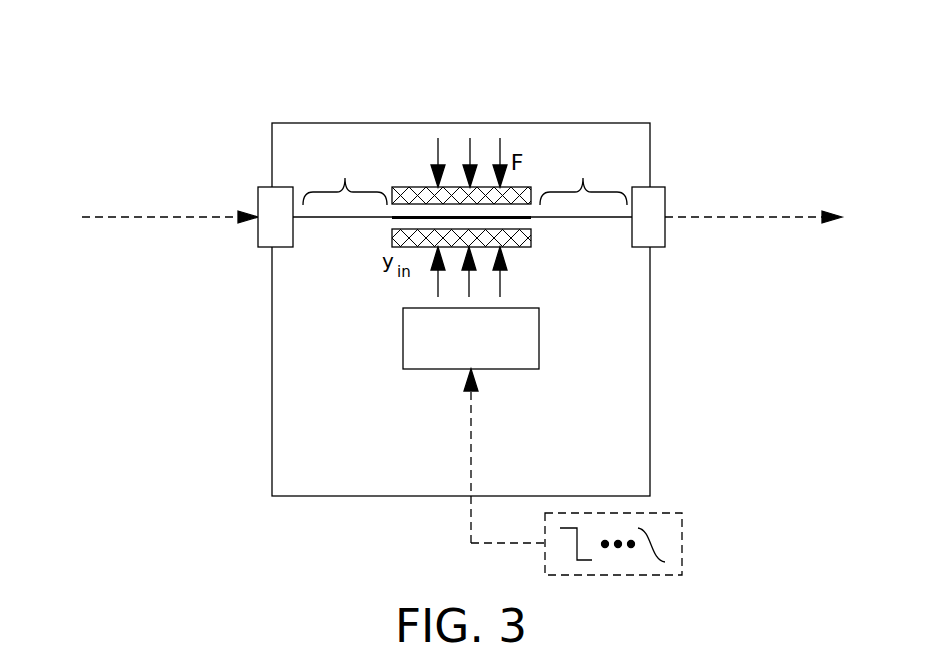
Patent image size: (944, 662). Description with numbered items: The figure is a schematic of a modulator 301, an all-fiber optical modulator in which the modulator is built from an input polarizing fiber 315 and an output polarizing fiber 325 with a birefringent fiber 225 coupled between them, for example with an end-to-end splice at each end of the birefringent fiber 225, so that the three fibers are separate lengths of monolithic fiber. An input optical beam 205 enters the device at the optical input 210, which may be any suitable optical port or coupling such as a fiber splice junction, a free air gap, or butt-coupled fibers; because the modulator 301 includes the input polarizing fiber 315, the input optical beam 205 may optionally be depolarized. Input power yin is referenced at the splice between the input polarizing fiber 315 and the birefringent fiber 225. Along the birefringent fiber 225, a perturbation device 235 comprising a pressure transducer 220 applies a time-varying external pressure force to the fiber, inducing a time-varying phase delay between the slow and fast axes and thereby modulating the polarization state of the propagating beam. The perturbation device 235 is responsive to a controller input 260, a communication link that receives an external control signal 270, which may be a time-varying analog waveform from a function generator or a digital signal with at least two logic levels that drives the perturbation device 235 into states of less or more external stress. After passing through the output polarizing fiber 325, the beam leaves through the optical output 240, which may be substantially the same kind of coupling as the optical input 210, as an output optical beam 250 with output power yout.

The modulator 301 is at (252, 69).
The input optical beam 205 is at (137, 218).
The optical input 210 is at (260, 187).
The pressure transducer 220 is at (418, 187).
The birefringent fiber 225 is at (408, 219).
The perturbation device 235 is at (471, 338).
The optical output 240 is at (663, 187).
The output optical beam 250 is at (753, 217).
The controller input 260 is at (497, 456).
The external control signal 270 is at (682, 524).
The input polarizing fiber 315 is at (345, 175).
The output polarizing fiber 325 is at (583, 175).